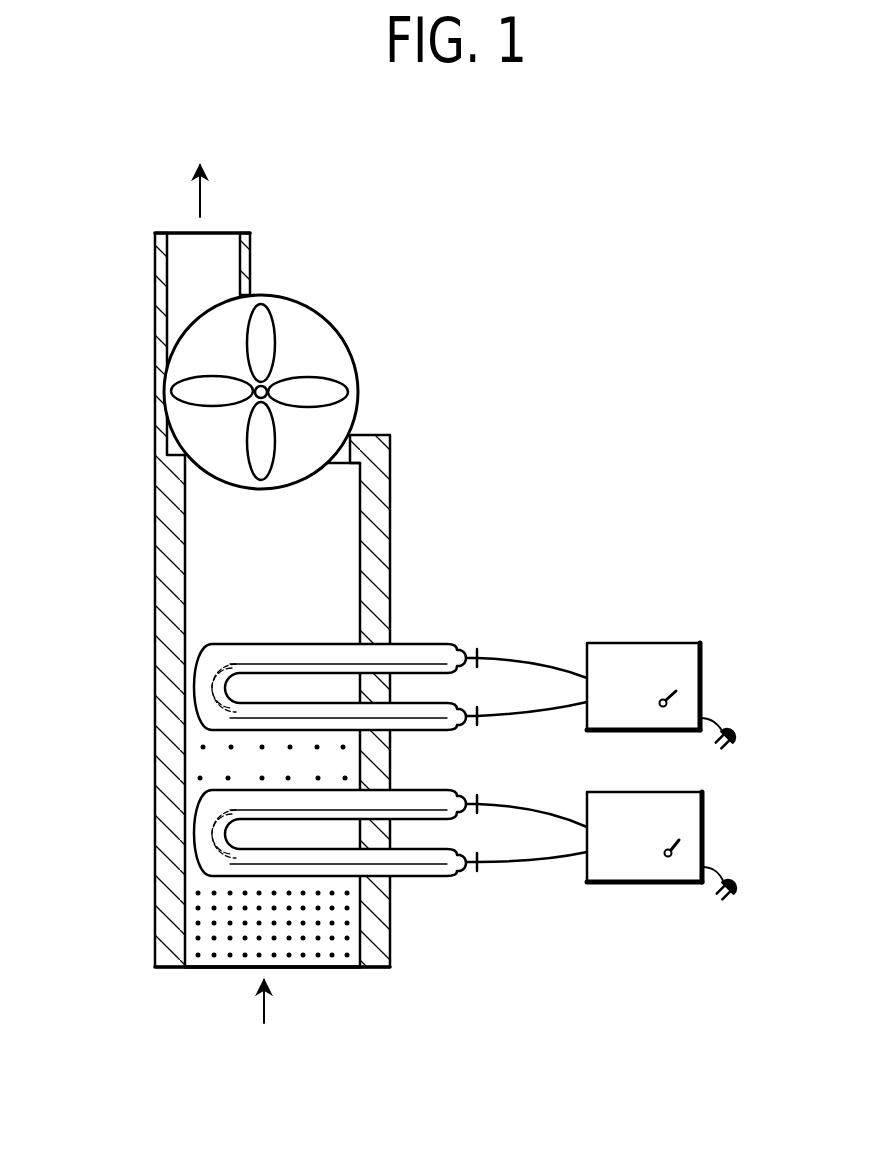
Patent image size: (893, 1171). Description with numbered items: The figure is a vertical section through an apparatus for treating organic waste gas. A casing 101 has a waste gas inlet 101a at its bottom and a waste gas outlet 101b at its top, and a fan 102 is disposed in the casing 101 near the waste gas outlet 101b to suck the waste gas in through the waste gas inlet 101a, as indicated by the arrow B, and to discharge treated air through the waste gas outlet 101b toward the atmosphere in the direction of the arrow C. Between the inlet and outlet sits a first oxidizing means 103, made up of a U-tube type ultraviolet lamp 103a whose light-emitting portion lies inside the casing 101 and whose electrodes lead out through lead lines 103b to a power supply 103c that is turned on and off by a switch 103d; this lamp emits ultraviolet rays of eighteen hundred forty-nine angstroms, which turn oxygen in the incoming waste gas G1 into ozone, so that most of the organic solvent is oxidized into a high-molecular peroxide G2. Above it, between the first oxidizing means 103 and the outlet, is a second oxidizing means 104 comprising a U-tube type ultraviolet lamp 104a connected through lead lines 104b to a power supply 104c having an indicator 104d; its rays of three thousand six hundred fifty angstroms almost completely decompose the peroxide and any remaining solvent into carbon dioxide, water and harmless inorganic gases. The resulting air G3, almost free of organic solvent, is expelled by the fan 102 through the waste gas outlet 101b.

The casing 101 is at (398, 518).
The waste gas inlet 101a is at (345, 958).
The waste gas outlet 101b is at (240, 250).
The fan 102 is at (345, 336).
The first oxidizing means 103 is at (493, 839).
The U-tube type ultraviolet lamp 103a is at (414, 790).
The lead lines 103b is at (536, 853).
The power supply 103c is at (704, 819).
The switch 103d is at (669, 857).
The second oxidizing means 104 is at (495, 644).
The U-tube type ultraviolet lamp 104a is at (418, 643).
The lead lines 104b is at (550, 703).
The power supply 104c is at (628, 644).
The second controller indicator lamp 104d is at (676, 691).
The waste gas G1 is at (203, 930).
The high-molecular peroxide G2 is at (207, 760).
The air G3 is at (205, 603).
The arrow B is at (279, 1005).
The gas outflow direction C is at (216, 187).